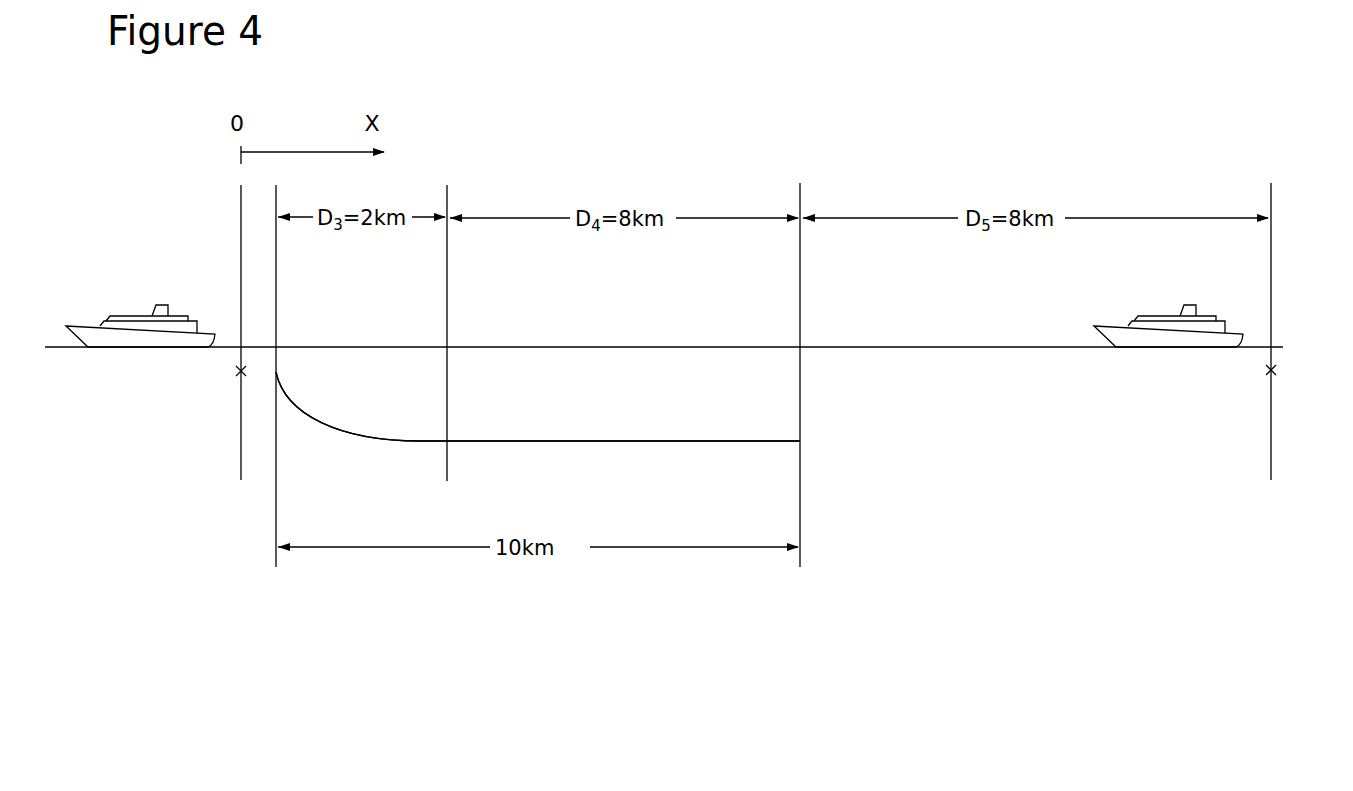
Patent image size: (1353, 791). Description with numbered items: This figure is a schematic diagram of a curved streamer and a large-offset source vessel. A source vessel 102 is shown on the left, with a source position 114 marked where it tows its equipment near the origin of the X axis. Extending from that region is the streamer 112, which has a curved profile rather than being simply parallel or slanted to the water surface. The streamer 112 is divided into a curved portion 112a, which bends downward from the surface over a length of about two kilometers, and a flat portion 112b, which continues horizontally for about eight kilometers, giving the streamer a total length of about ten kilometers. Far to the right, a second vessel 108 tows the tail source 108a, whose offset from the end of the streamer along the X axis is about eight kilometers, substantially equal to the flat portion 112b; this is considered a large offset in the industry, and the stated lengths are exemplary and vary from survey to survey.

The source vessel 102 is at (135, 356).
The source position 114 is at (240, 372).
The streamer 112 is at (385, 452).
The curved portion 112a is at (348, 411).
The flat portion 112b is at (639, 438).
The tow vessel 108 is at (1180, 348).
The tail source 108a is at (1272, 371).